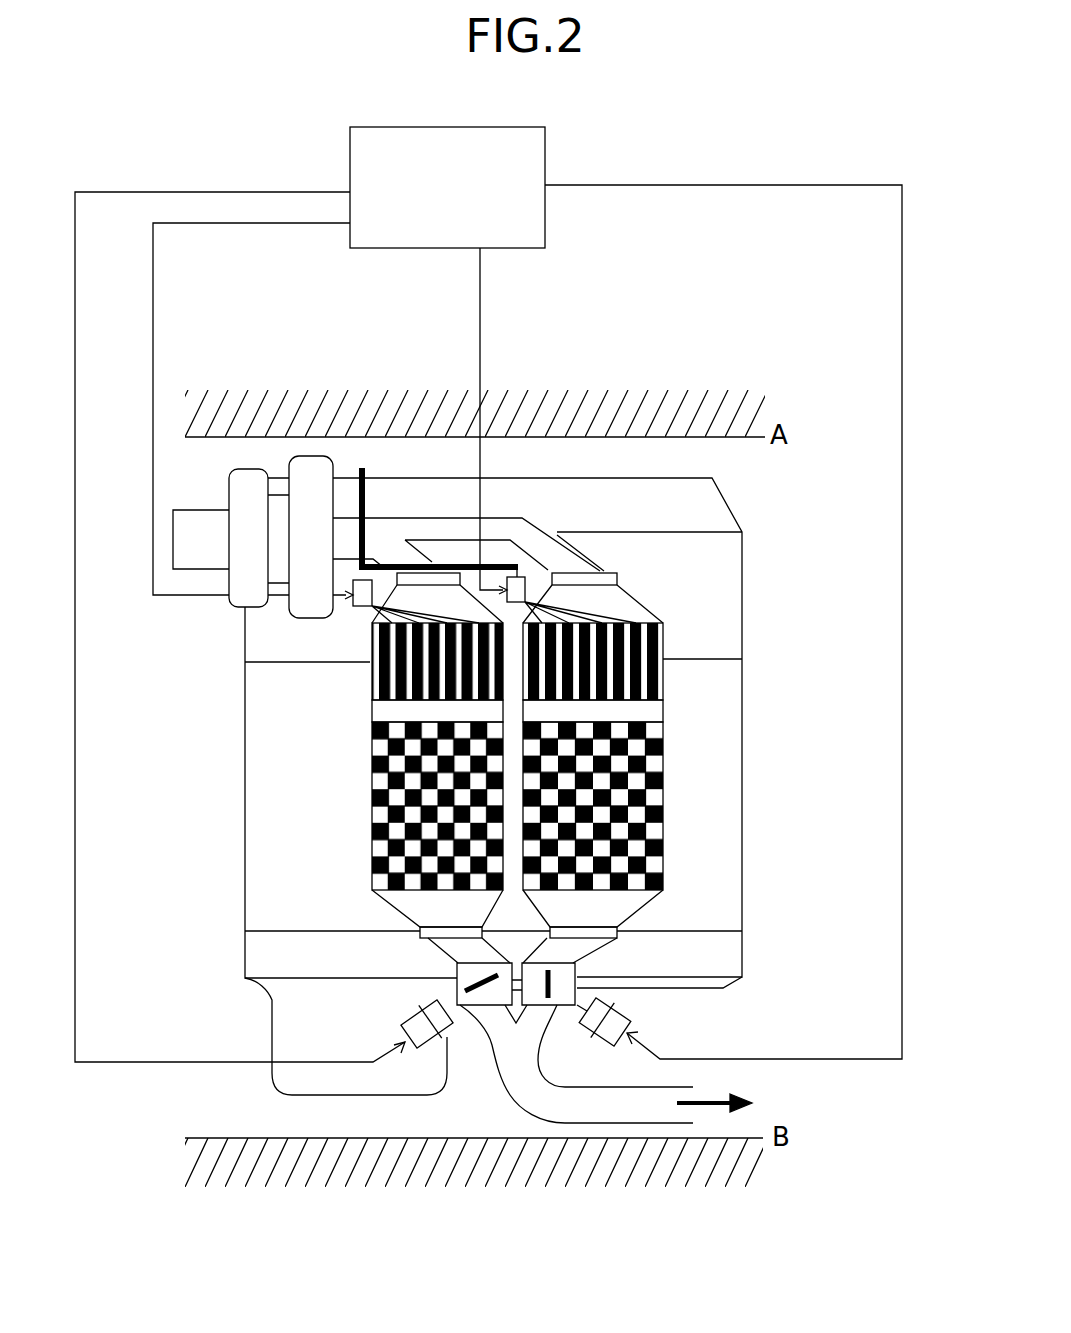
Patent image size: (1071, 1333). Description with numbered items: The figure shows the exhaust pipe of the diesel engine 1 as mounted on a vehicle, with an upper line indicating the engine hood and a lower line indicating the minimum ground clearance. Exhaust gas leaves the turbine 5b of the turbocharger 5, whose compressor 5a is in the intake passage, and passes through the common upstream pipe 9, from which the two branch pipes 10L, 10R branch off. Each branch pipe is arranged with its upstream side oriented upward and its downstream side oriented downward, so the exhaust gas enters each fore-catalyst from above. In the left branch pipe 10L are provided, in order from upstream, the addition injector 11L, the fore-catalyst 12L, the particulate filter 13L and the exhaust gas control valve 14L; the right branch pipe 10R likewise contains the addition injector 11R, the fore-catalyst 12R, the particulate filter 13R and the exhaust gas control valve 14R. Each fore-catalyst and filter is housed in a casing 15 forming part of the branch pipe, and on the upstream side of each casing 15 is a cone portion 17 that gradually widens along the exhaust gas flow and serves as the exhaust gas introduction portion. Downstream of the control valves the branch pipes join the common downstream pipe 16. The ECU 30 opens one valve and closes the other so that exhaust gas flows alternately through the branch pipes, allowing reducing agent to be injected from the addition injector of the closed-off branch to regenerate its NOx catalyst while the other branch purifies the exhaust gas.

The diesel engine 1 is at (774, 529).
The turbocharger 5 is at (322, 341).
The compressor 5a is at (246, 469).
The turbine 5b is at (303, 456).
The upstream pipe 9 is at (348, 517).
The left branch pipe 10L is at (427, 557).
The right branch pipe 10R is at (578, 537).
The left addition injector 11L is at (353, 598).
The right addition injector 11R is at (530, 592).
The left fore-catalyst 12L is at (365, 680).
The right fore-catalyst 12R is at (667, 673).
The left particulate filter 13L is at (370, 812).
The right particulate filter 13R is at (667, 800).
The left exhaust gas control valve 14L is at (455, 988).
The right exhaust gas control valve 14R is at (577, 970).
The casing 15 is at (368, 745).
The downstream pipe 16 is at (513, 1097).
The cone portion 17 is at (645, 597).
The ECU 30 is at (443, 127).